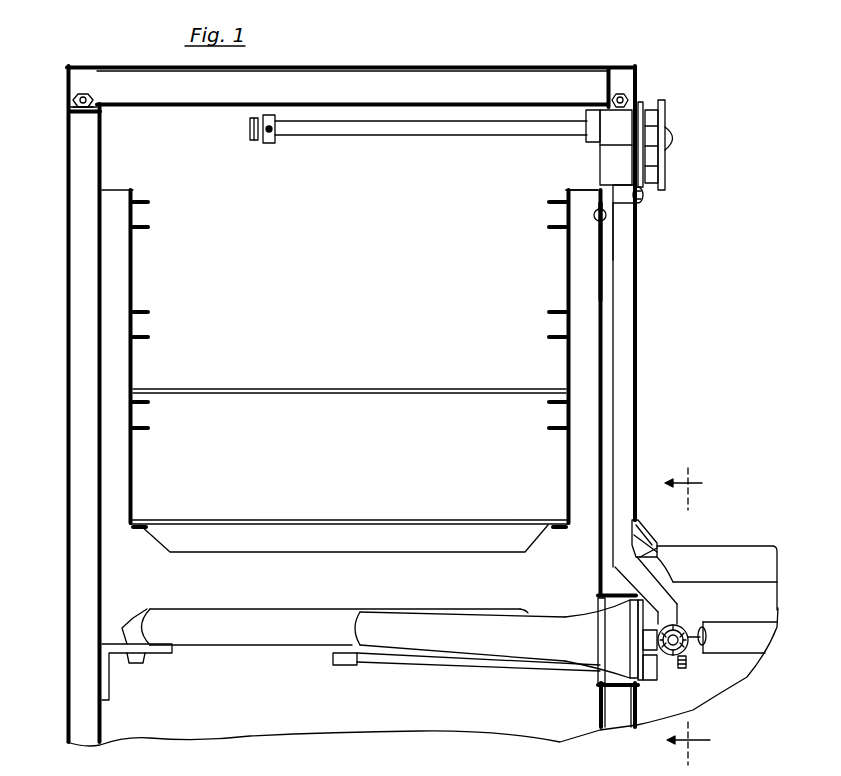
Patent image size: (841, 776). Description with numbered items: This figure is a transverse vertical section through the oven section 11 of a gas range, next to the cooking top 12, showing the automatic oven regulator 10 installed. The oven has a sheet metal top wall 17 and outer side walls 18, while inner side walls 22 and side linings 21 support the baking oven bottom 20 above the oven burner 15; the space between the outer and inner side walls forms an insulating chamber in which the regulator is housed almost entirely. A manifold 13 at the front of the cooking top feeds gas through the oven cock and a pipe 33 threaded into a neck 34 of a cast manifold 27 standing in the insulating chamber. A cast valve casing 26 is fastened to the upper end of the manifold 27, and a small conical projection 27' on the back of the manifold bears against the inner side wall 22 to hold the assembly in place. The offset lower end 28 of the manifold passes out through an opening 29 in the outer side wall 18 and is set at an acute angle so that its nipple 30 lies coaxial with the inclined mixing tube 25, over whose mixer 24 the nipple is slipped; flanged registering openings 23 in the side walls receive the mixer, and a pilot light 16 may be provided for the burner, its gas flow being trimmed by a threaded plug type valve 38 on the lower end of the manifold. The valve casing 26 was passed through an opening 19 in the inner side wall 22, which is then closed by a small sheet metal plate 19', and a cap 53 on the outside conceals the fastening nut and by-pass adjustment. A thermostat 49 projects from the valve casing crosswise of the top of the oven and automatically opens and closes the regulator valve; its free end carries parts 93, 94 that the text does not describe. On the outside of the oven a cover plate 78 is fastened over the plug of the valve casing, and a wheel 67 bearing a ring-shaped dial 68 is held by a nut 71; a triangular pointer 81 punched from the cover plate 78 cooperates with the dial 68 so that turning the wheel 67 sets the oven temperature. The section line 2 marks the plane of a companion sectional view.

The section line 2- 2 is at (687, 613).
The automatic oven regulator 10 is at (653, 99).
The oven section 11 is at (66, 283).
The cooking top 12 is at (754, 547).
The manifold 13 is at (757, 632).
The oven burner 15 is at (295, 613).
The pilot light 16 is at (343, 668).
The top wall 17 is at (313, 66).
The side walls 18 is at (67, 514).
The opening 19 is at (563, 251).
The sheet metal plate 19' is at (546, 213).
The baking oven bottom 20 is at (297, 519).
The side linings 21 is at (565, 276).
The inner side walls 22 is at (104, 577).
The flanged registering openings 23 is at (606, 673).
The mixer 24 is at (632, 618).
The mixing tube 25 is at (460, 636).
The valve casing 26 is at (600, 166).
The manifold 27 is at (647, 385).
The conical projection 27' is at (647, 239).
The offset lower end 28 is at (678, 606).
The opening 29 is at (597, 590).
The nipple 30 is at (640, 641).
The pipe 33 is at (707, 637).
The neck 34 is at (684, 651).
The plug type valve 38 is at (684, 670).
The thermostat 49 is at (437, 135).
The cap 53 is at (640, 208).
The wheel 67 is at (666, 184).
The dial 68 is at (647, 197).
The nut 71 is at (670, 146).
The cover plate 78 is at (642, 102).
The pointer 81 is at (663, 131).
The nut 93 is at (253, 142).
The clamp bracket 94 is at (268, 146).